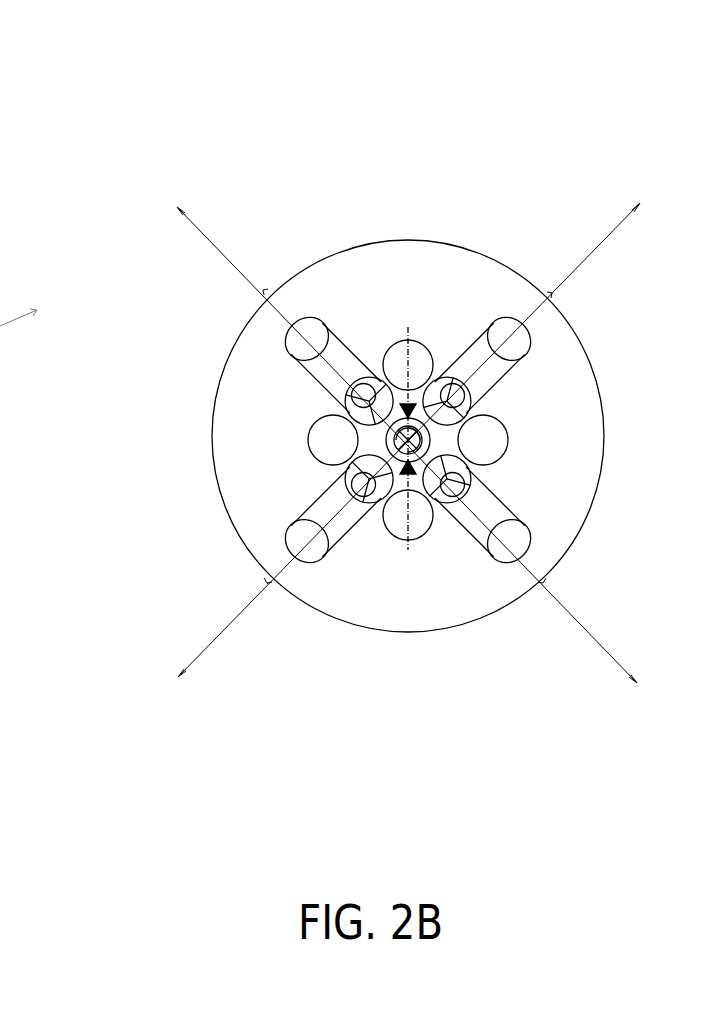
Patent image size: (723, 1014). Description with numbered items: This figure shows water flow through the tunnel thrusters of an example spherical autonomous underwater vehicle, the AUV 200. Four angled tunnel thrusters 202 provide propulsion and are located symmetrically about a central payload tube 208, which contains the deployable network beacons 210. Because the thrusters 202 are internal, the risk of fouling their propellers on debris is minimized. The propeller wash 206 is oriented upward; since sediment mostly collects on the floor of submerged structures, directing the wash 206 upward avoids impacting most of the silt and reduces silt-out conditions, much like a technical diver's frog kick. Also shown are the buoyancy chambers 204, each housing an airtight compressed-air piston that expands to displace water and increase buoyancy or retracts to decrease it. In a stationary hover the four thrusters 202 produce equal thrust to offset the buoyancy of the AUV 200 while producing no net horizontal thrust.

The AUV 200 is at (78, 98).
The tunnel thrusters 202 is at (454, 380).
The buoyancy chambers 204 is at (313, 434).
The propeller wash 206 is at (603, 648).
The central payload tube 208 is at (408, 340).
The deployable network beacons 210 is at (408, 538).